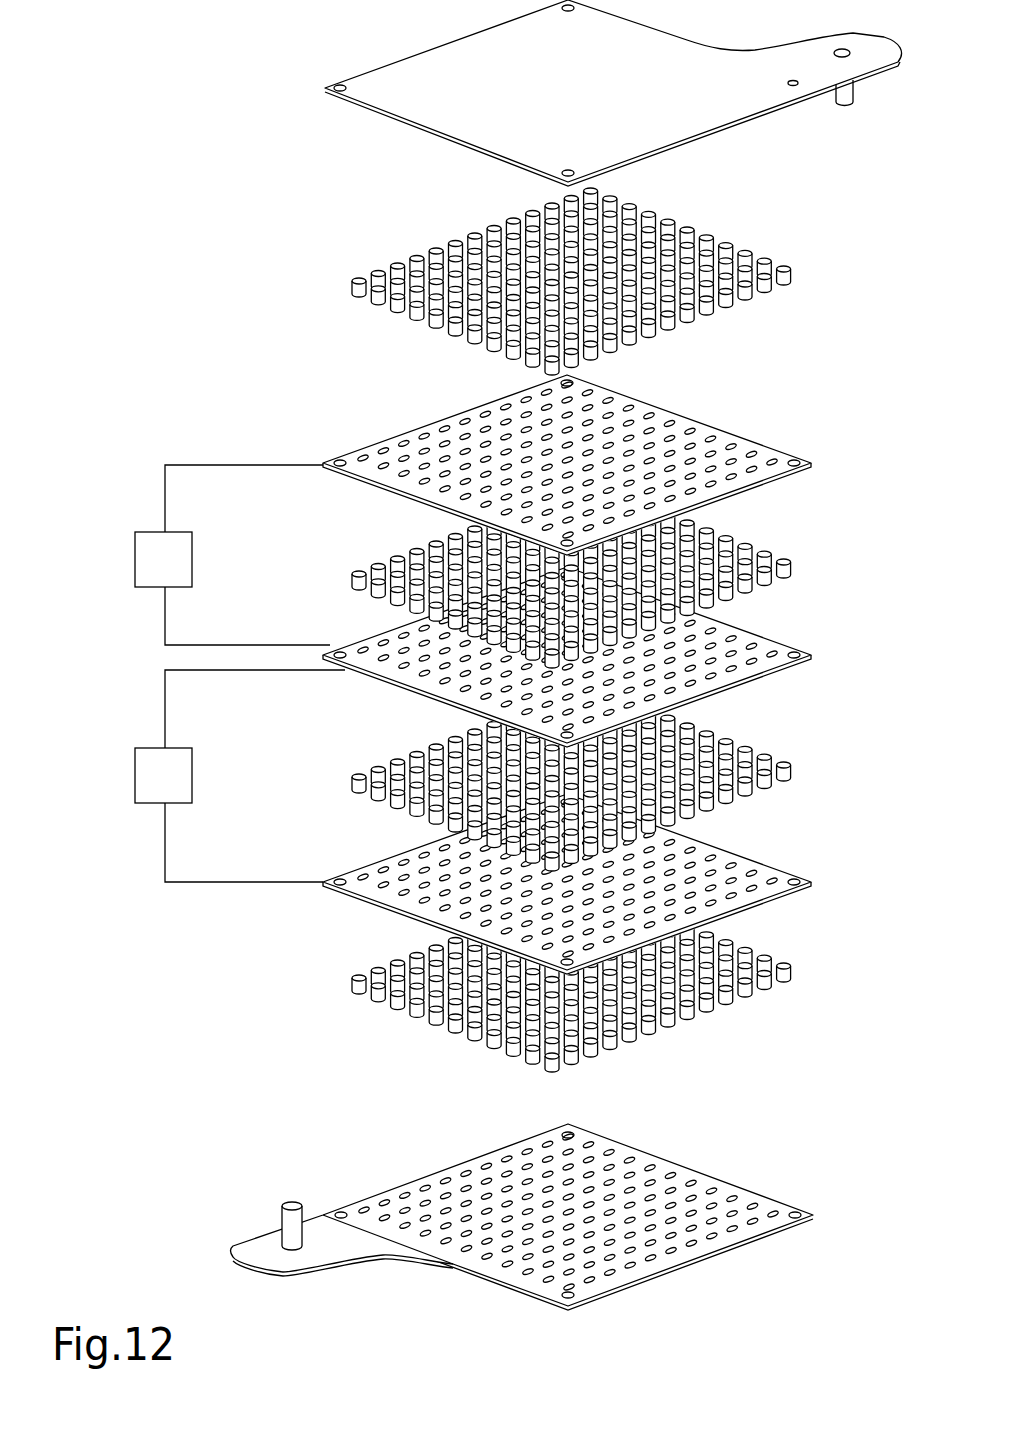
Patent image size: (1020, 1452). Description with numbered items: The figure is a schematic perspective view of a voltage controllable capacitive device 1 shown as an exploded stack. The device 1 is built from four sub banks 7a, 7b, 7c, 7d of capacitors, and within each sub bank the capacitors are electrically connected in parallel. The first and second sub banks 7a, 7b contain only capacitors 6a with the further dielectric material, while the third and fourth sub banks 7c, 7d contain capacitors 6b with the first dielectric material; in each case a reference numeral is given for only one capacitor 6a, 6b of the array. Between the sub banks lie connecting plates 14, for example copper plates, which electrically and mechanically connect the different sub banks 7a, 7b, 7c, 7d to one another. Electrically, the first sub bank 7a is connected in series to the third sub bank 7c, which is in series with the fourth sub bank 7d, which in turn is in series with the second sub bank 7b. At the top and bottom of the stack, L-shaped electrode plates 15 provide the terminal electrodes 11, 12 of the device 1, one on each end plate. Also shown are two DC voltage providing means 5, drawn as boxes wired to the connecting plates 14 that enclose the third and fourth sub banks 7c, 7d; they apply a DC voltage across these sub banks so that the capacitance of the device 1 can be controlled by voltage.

The voltage controllable capacitive device 1 is at (125, 1146).
The DC voltage providing means 5 is at (138, 562).
The capacitor 6a is at (586, 630).
The capacitor 6b is at (617, 676).
The first sub bank 7a is at (800, 262).
The second sub bank 7b is at (797, 970).
The third sub bank 7c is at (805, 562).
The fourth sub bank 7d is at (802, 762).
The locating pin 11 is at (847, 97).
The locating pin 12 is at (283, 1238).
The connecting plate 14 is at (812, 463).
The L-shaped electrode plate 15 is at (537, 655).